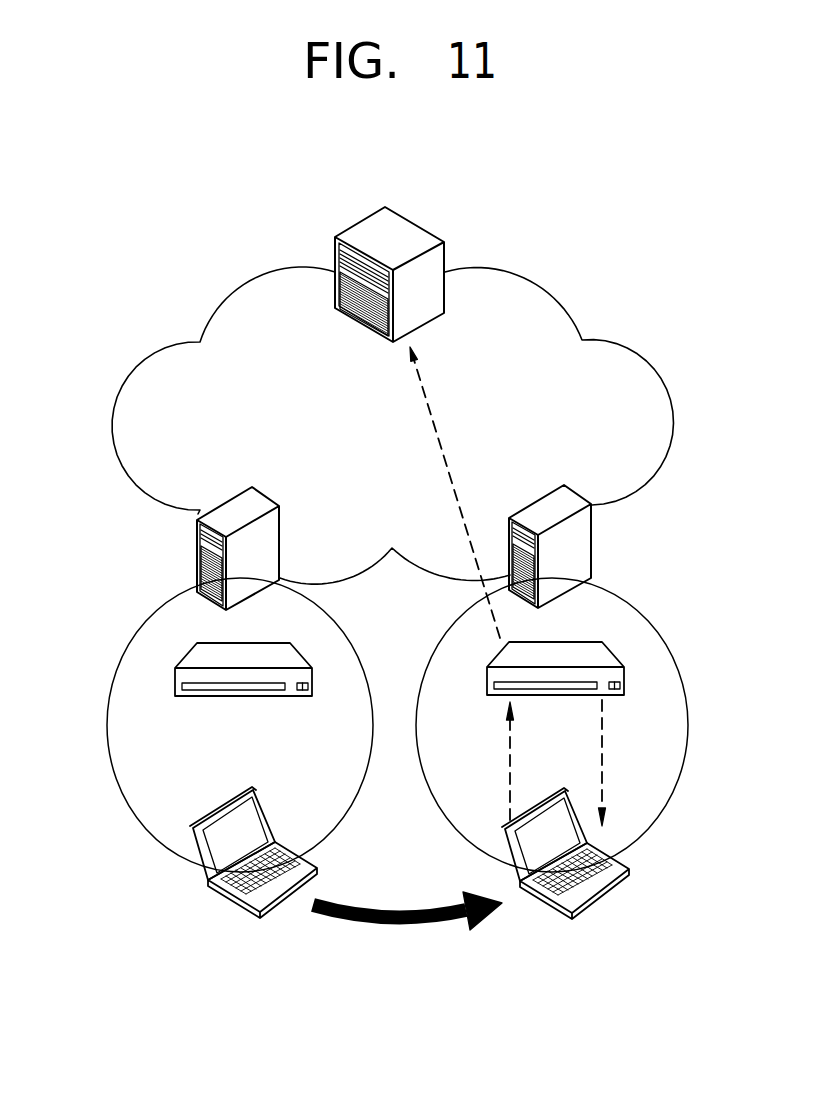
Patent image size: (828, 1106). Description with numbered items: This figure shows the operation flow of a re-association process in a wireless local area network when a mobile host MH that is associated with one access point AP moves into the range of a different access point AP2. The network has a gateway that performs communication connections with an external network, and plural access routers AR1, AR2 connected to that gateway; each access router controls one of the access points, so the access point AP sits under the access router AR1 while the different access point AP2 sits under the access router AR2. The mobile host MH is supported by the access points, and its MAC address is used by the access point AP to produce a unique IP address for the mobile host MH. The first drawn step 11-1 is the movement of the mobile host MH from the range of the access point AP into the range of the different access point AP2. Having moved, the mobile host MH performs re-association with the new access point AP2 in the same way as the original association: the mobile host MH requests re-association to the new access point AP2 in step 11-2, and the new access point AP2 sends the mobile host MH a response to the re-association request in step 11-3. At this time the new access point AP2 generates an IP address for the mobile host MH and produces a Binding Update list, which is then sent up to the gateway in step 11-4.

The movement of mobile host into range of different access point 11-1 is at (407, 926).
The re-association request 11-2 is at (471, 761).
The re-association response 11-3 is at (640, 763).
The Binding Update list transmission 11-4 is at (434, 492).
The access router AR1 is at (215, 548).
The access router AR2 is at (575, 546).
The access point AP is at (237, 688).
The different access point AP2 is at (582, 655).
The mobile host MH is at (422, 862).